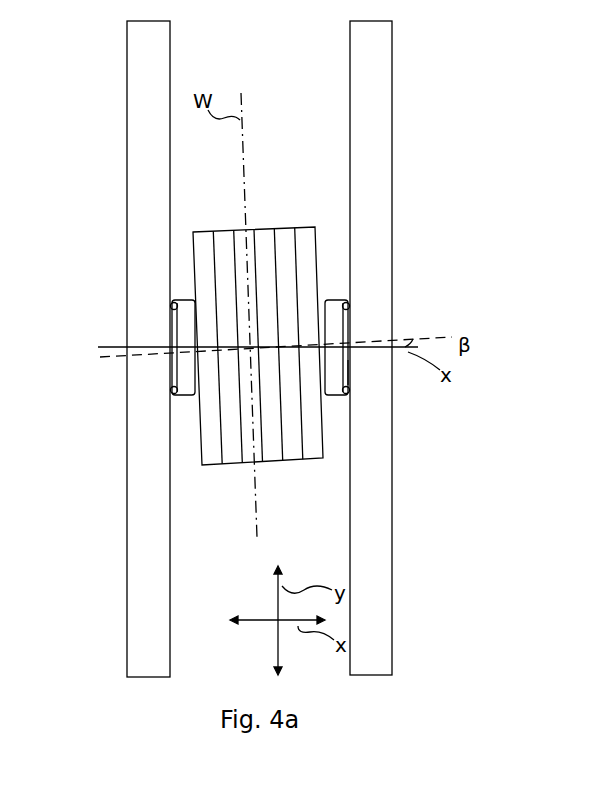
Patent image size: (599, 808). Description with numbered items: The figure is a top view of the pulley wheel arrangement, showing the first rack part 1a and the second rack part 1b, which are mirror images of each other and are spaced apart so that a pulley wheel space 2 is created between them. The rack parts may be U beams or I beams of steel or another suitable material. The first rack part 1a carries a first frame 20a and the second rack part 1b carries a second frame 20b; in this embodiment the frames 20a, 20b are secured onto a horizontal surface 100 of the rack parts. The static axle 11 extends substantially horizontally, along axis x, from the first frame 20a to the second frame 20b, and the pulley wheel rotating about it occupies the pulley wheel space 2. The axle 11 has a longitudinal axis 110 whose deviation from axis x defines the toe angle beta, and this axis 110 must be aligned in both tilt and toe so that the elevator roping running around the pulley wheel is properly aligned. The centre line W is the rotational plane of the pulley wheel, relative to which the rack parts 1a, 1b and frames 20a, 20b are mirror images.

The first rack part 1a is at (378, 500).
The second rack part 1b is at (142, 506).
The horizontal surface 100 is at (170, 557).
The pulley wheel space 2 is at (258, 311).
The first frame 20a is at (348, 307).
The second frame 20b is at (172, 318).
The longitudinal axis 110 is at (408, 340).
The axle 11 is at (352, 372).